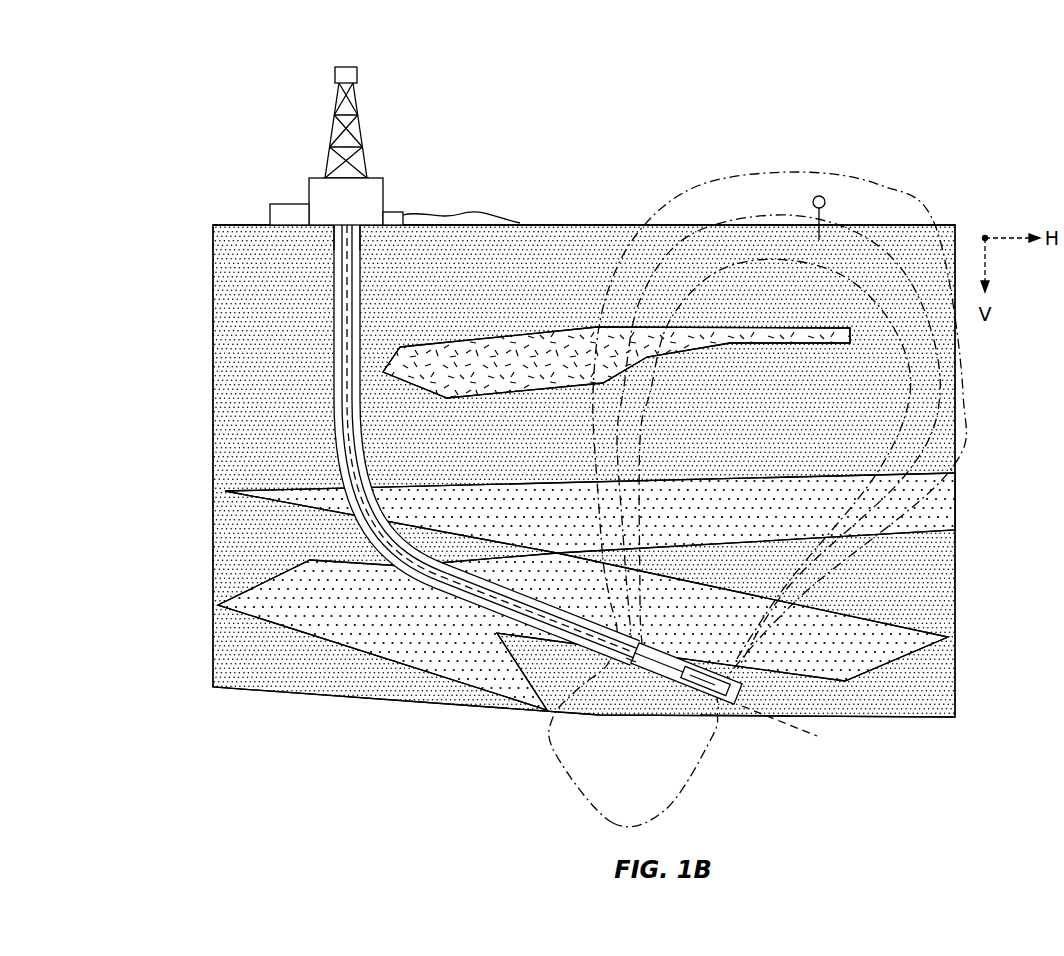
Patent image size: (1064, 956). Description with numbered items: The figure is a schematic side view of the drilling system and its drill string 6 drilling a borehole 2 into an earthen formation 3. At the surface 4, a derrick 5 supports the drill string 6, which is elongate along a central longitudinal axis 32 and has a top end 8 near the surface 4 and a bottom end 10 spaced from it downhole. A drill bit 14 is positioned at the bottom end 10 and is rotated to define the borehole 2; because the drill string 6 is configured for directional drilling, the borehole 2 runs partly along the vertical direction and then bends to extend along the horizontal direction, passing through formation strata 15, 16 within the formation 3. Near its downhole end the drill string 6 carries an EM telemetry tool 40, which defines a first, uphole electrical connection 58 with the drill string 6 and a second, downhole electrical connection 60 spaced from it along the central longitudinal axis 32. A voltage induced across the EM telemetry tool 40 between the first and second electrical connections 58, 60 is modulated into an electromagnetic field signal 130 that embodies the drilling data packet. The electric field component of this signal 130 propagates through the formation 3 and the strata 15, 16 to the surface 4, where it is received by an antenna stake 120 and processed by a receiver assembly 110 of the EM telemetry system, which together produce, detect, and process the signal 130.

The borehole 2 is at (340, 420).
The earthen formation 3 is at (245, 432).
The surface 4 is at (944, 226).
The derrick 5 is at (327, 134).
The drill string 6 is at (360, 514).
The top end 8 is at (330, 247).
The bottom end 10 is at (745, 727).
The drill bit 14 is at (742, 687).
The formation strata 15 is at (373, 623).
The formation strata 16 is at (508, 373).
The central longitudinal axis 32 is at (817, 736).
The EM telemetry tool 40 is at (668, 683).
The first electrical connection 58 is at (630, 660).
The second downhole electrical connection 60 is at (700, 680).
The receiver assembly 110 is at (390, 213).
The antenna stake 120 is at (840, 196).
The electromagnetic field signal 130 is at (913, 290).